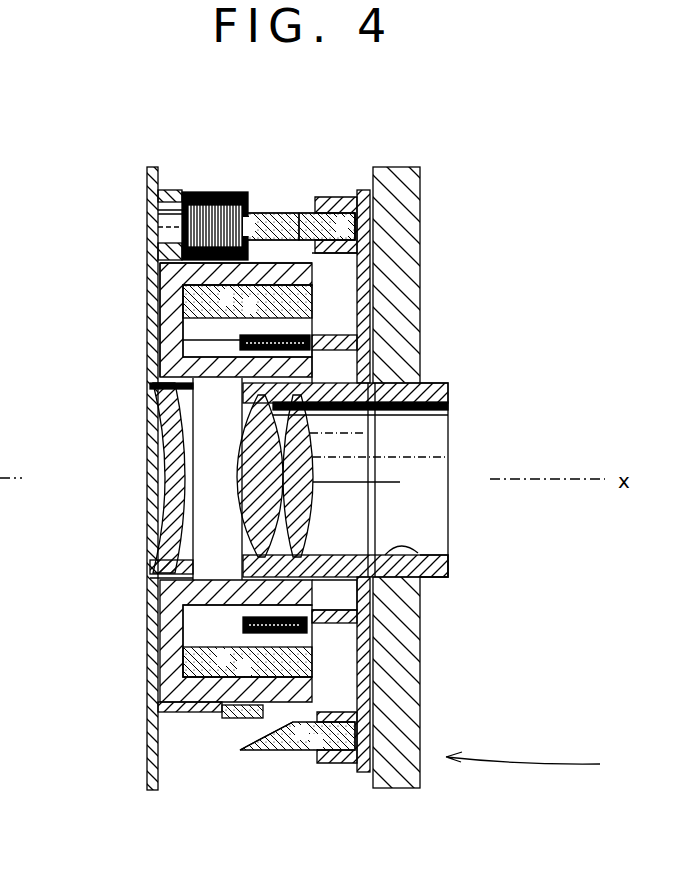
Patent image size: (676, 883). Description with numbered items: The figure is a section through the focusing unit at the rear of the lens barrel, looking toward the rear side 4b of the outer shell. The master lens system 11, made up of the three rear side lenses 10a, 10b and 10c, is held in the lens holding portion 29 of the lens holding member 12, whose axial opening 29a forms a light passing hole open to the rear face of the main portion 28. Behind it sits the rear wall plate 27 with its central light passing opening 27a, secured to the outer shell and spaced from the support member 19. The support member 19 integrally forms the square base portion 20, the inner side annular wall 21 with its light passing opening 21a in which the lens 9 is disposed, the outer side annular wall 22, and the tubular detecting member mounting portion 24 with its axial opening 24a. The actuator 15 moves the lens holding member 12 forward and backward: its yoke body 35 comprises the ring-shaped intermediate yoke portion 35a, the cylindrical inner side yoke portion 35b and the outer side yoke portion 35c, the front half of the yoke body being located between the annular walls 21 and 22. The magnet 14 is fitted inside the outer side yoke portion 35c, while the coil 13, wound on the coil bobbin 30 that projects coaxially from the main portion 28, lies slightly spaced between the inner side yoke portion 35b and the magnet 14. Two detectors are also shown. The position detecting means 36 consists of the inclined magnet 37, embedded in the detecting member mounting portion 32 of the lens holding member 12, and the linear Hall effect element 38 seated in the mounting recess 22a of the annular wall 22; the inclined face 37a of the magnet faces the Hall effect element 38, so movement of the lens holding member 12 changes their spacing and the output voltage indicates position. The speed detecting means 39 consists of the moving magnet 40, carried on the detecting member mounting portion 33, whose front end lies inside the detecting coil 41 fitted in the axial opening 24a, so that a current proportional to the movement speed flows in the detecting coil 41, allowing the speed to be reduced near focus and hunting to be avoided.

The rear side of the outer shell 4b is at (523, 764).
The lens 9 is at (162, 512).
The rear side lens 10a is at (300, 433).
The rear side lens 10b is at (300, 457).
The rear side lens 10c is at (400, 482).
The master lens system 11 is at (413, 432).
The lens holding member 12 is at (427, 477).
The coil 13 is at (205, 344).
The magnet 14 is at (183, 300).
The actuator 15 is at (182, 310).
The support member 19 is at (150, 185).
The base portion 20 is at (150, 762).
The inner side annular wall 21 is at (198, 381).
The light passing opening 21a is at (152, 570).
The outer side annular wall 22 is at (258, 318).
The mounting recess 22a is at (160, 711).
The detecting member mounting portion 24 is at (204, 193).
The axial opening 24a is at (222, 193).
The rear wall plate 27 is at (416, 204).
The light passing opening 27a is at (420, 552).
The main portion 28 is at (362, 303).
The lens holding portion 29 is at (355, 485).
The axial opening 29a is at (448, 574).
The coil bobbin 30 is at (343, 357).
The detecting member mounting portion 32 is at (340, 764).
The detecting member mounting portion 33 is at (350, 200).
The yoke body 35 is at (162, 270).
The intermediate yoke portion 35a is at (162, 620).
The inner side yoke portion 35b is at (313, 594).
The outer side yoke portion 35c is at (300, 688).
The position detecting means 36 is at (268, 779).
The inclined magnet 37 is at (291, 769).
The inclined face 37a is at (252, 734).
The Hall effect element 38 is at (242, 719).
The speed detecting means 39 is at (306, 167).
The moving magnet 40 is at (305, 205).
The detecting coil 41 is at (256, 198).